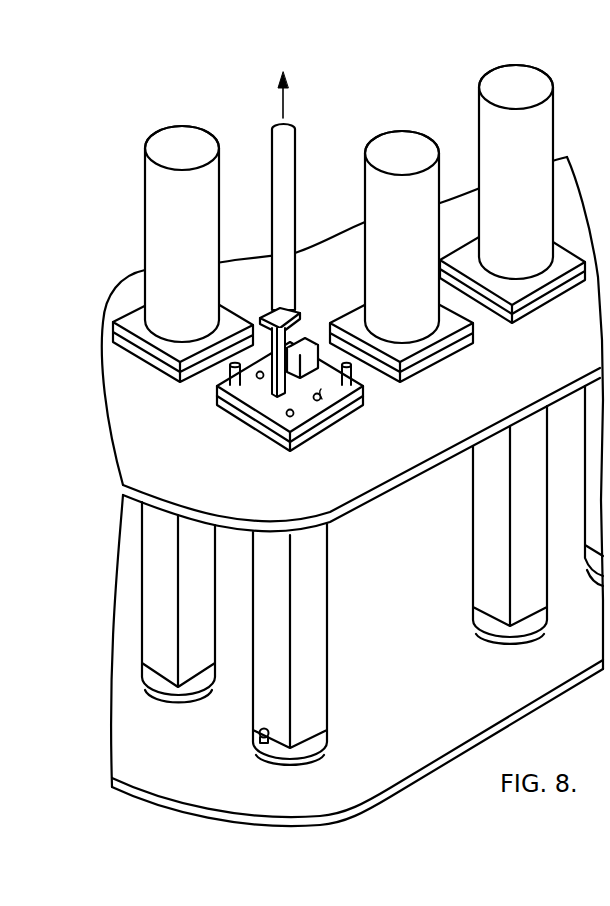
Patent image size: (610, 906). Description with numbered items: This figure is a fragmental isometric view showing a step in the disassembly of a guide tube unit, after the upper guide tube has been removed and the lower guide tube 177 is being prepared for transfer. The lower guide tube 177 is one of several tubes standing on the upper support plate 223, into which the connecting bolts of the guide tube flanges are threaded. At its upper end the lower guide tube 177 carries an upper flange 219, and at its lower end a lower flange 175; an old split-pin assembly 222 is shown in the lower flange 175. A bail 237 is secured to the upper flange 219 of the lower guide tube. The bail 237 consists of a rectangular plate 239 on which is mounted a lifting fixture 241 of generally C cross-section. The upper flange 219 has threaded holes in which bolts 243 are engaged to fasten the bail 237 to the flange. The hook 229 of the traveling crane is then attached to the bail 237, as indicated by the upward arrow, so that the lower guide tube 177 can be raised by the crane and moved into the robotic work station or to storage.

The lower flange 175 is at (520, 637).
The lower guide tube 177 is at (249, 670).
The upper flange 219 is at (328, 418).
The split-pin assembly 222 is at (257, 746).
The upper support plate 223 is at (130, 450).
The hook 229 is at (298, 308).
The bail 237 is at (250, 405).
The rectangular plate 239 is at (278, 407).
The lifting fixture 241 is at (306, 336).
The bolts 243 is at (333, 392).